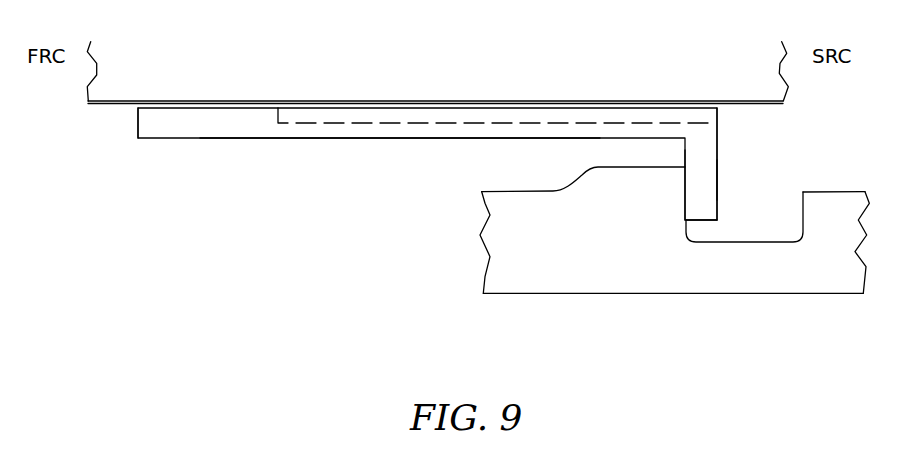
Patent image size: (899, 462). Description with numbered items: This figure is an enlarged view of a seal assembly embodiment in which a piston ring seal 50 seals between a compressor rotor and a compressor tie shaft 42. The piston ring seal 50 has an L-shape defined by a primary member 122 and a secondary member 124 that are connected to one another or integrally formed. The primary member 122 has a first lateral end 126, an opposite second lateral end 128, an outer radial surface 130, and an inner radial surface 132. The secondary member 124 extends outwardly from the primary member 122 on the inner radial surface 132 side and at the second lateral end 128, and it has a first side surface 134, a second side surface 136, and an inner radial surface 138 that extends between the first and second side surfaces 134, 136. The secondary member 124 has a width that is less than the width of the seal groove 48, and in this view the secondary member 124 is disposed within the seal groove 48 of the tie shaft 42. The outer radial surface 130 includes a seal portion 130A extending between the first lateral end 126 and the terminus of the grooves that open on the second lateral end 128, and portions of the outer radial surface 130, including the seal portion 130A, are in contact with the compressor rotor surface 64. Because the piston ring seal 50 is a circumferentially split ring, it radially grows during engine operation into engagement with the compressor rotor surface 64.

The tie shaft 42 is at (570, 282).
The seal groove 48 is at (781, 270).
The piston ring seal 50 is at (218, 187).
The compressor rotor surface 64 is at (103, 104).
The primary member 122 is at (311, 166).
The secondary member 124 is at (747, 152).
The first lateral end 126 is at (138, 127).
The second lateral end 128 is at (717, 116).
The outer radial surface 130 is at (437, 101).
The seal portion 130A is at (220, 101).
The inner radial surface 132 is at (378, 138).
The first side surface 134 is at (685, 188).
The second side surface 136 is at (717, 198).
The inner radial surface 138 is at (698, 222).